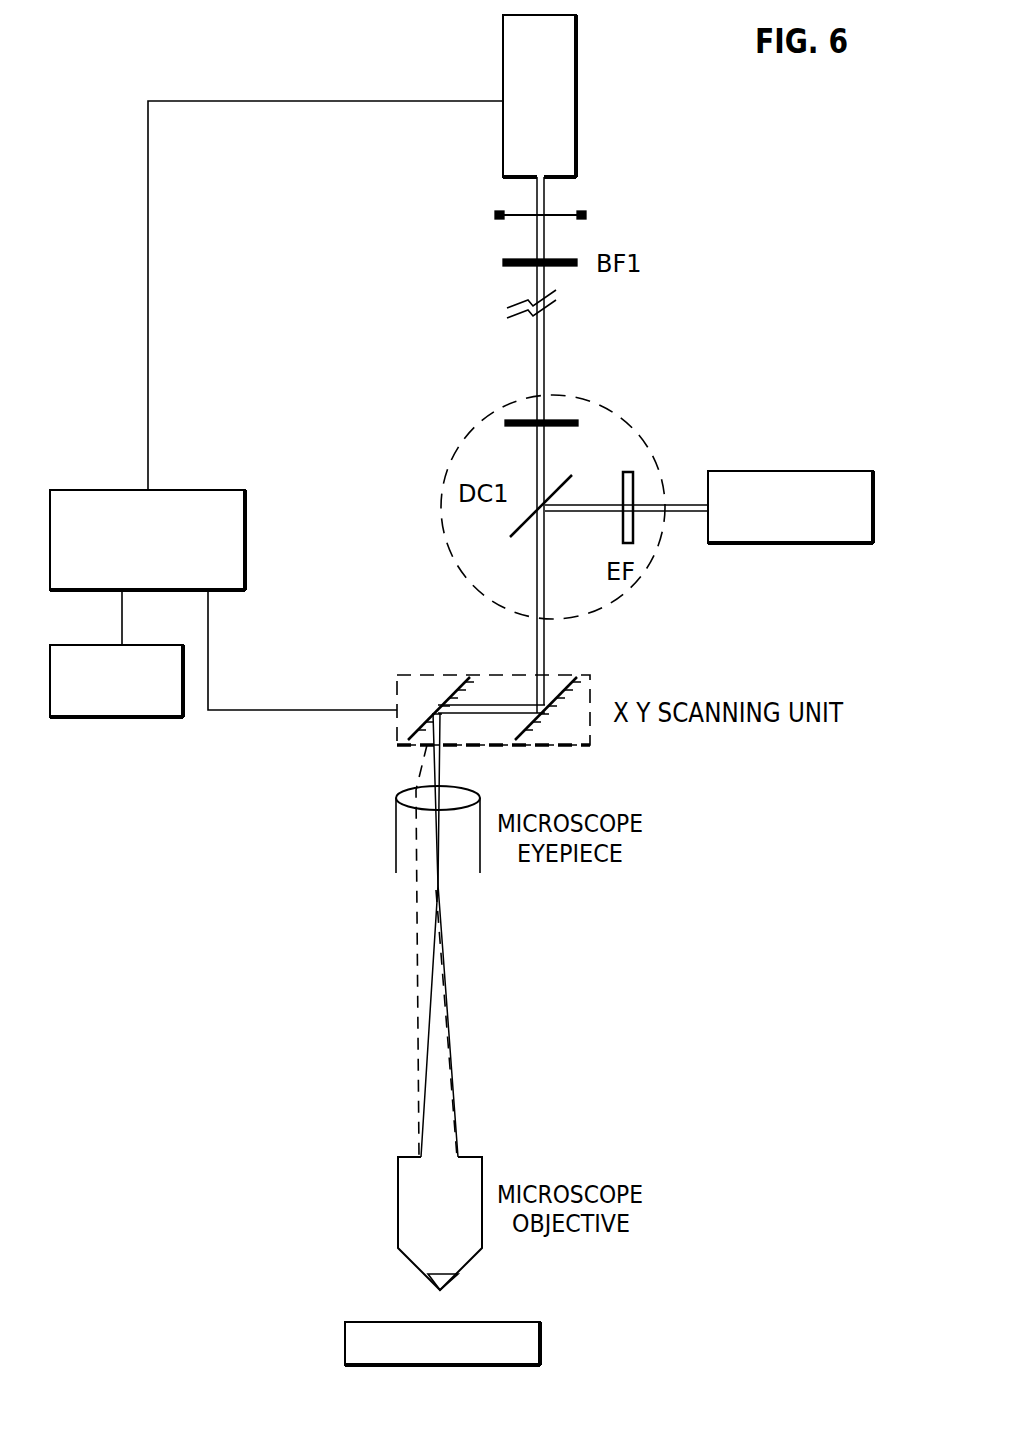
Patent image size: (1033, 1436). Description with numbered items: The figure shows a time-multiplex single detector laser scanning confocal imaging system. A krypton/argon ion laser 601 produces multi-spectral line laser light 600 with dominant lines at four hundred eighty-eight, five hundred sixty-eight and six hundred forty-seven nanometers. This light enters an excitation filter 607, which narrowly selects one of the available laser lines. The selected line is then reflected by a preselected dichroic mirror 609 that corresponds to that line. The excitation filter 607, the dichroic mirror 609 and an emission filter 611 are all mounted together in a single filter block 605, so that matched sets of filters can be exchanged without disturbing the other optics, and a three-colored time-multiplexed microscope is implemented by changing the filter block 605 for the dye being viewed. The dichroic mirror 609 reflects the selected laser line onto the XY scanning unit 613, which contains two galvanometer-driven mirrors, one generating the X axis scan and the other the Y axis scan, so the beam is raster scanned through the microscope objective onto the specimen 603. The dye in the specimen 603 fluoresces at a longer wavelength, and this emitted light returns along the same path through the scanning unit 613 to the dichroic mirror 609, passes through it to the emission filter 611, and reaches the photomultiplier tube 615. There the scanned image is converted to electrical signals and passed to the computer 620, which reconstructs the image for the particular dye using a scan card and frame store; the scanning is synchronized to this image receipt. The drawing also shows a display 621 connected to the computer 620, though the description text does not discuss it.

The multi-spectral line laser light 600 is at (687, 511).
The krypton/argon ion laser 601 is at (788, 470).
The specimen 603 is at (345, 1333).
The filter block 605 is at (457, 453).
The excitation filter 607 is at (642, 440).
The dichroic mirror 609 is at (523, 527).
The emission filter 611 is at (515, 420).
The XY scanning unit 613 is at (447, 675).
The photomultiplier tube 615 is at (577, 105).
The computer 620 is at (222, 488).
The display 621 is at (118, 717).